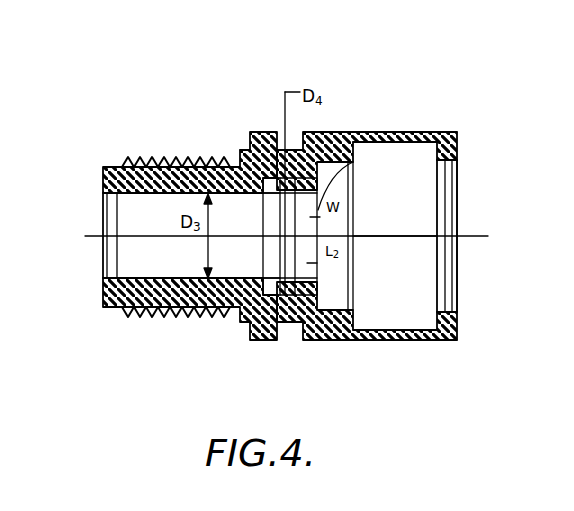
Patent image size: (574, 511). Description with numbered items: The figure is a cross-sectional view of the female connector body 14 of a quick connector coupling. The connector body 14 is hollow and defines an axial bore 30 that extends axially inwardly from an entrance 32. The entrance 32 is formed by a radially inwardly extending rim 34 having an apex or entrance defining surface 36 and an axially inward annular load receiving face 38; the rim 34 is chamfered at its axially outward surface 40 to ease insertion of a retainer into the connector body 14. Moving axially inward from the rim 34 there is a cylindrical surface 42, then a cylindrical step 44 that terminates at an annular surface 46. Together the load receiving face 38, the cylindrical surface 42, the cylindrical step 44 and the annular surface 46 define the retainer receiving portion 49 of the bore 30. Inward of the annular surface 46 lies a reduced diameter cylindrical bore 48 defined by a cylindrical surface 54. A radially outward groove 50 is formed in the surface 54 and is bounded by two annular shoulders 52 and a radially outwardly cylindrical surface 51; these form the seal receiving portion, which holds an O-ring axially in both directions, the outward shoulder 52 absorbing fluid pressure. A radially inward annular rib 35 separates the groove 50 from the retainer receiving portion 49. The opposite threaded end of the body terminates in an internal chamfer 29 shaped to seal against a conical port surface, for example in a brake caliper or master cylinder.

The female connector body 14 is at (368, 91).
The internal chamfer 29 is at (102, 193).
The axial bore 30 is at (462, 267).
The entrance 32 is at (440, 207).
The rim 34 is at (457, 157).
The annular rib 35 is at (340, 132).
The entrance defining surface 36 is at (452, 178).
The load receiving face 38 is at (432, 150).
The axially outward surface 40 is at (457, 315).
The cylindrical surface 42 is at (384, 330).
The cylindrical step 44 is at (342, 283).
The annular surface 46 is at (342, 262).
The reduced diameter cylindrical bore 48 is at (353, 162).
The retainer receiving portion 49 is at (424, 270).
The groove 50 is at (267, 208).
The radially outwardly cylindrical surface 51 is at (247, 163).
The annular shoulders 52 is at (260, 266).
The cylindrical surface 54 is at (163, 278).